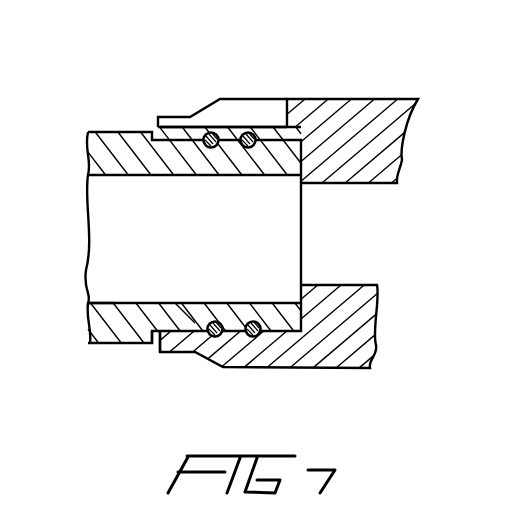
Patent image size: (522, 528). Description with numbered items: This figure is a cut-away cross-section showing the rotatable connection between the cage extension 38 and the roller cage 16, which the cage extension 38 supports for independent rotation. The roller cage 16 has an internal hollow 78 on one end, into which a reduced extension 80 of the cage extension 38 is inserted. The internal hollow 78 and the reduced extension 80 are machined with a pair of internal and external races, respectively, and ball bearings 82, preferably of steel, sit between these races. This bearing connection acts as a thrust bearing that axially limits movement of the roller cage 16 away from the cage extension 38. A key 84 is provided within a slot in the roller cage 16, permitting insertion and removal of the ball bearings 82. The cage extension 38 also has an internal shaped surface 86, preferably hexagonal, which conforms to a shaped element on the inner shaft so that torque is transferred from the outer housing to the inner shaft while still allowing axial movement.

The roller cage 16 is at (347, 118).
The cage extension 38 is at (126, 136).
The internal hollow 78 is at (170, 320).
The reduced extension 80 is at (182, 318).
The ball bearings 82 is at (248, 322).
The key 84 is at (252, 114).
The internal shaped surface 86 is at (102, 303).